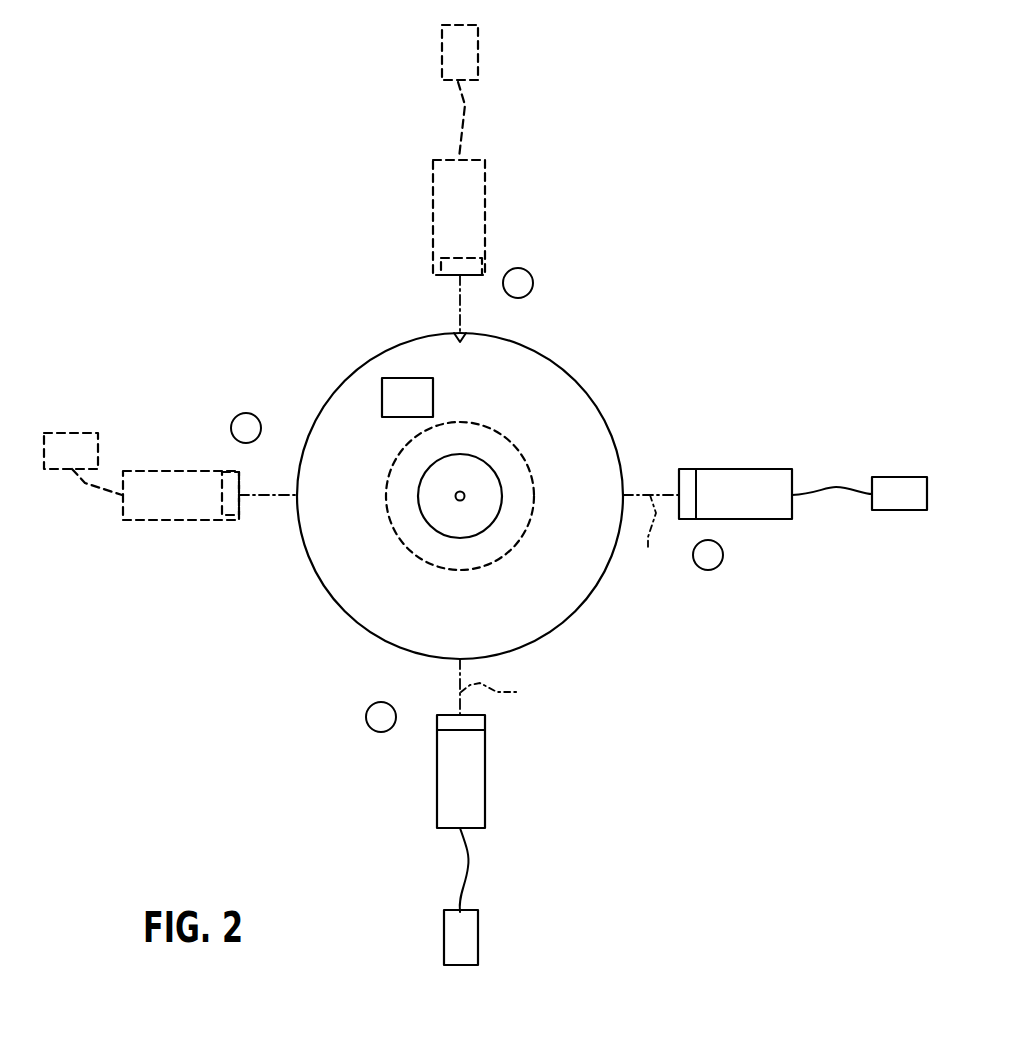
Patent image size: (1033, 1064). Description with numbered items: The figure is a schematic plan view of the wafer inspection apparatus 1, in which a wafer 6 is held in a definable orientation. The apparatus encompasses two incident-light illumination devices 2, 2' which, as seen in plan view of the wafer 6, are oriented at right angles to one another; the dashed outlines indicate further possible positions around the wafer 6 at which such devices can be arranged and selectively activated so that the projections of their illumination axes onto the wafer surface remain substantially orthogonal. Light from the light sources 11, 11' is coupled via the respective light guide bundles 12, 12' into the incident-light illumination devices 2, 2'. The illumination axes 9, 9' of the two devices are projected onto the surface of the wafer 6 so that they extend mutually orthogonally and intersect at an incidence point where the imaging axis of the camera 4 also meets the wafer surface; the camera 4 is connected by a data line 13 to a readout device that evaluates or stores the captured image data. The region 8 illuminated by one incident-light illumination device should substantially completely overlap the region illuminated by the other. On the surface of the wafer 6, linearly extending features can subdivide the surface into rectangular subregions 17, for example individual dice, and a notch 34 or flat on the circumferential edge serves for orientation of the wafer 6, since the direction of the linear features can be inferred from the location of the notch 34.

The wafer inspection apparatus 1 is at (265, 213).
The incident-light illumination device 2 is at (735, 450).
The incident-light illumination device 2' is at (498, 771).
The camera 4 is at (485, 508).
The wafer 6 is at (582, 385).
The illuminated region 8 is at (472, 422).
The illumination axis 9 is at (651, 542).
The illumination axis 9' is at (502, 692).
The light source 11 is at (899, 453).
The light source 11' is at (505, 937).
The light guide bundle 12 is at (832, 446).
The light guide bundle 12' is at (513, 870).
The data line 13 is at (465, 498).
The rectangular subregion 17 is at (405, 392).
The notch 34 is at (460, 336).